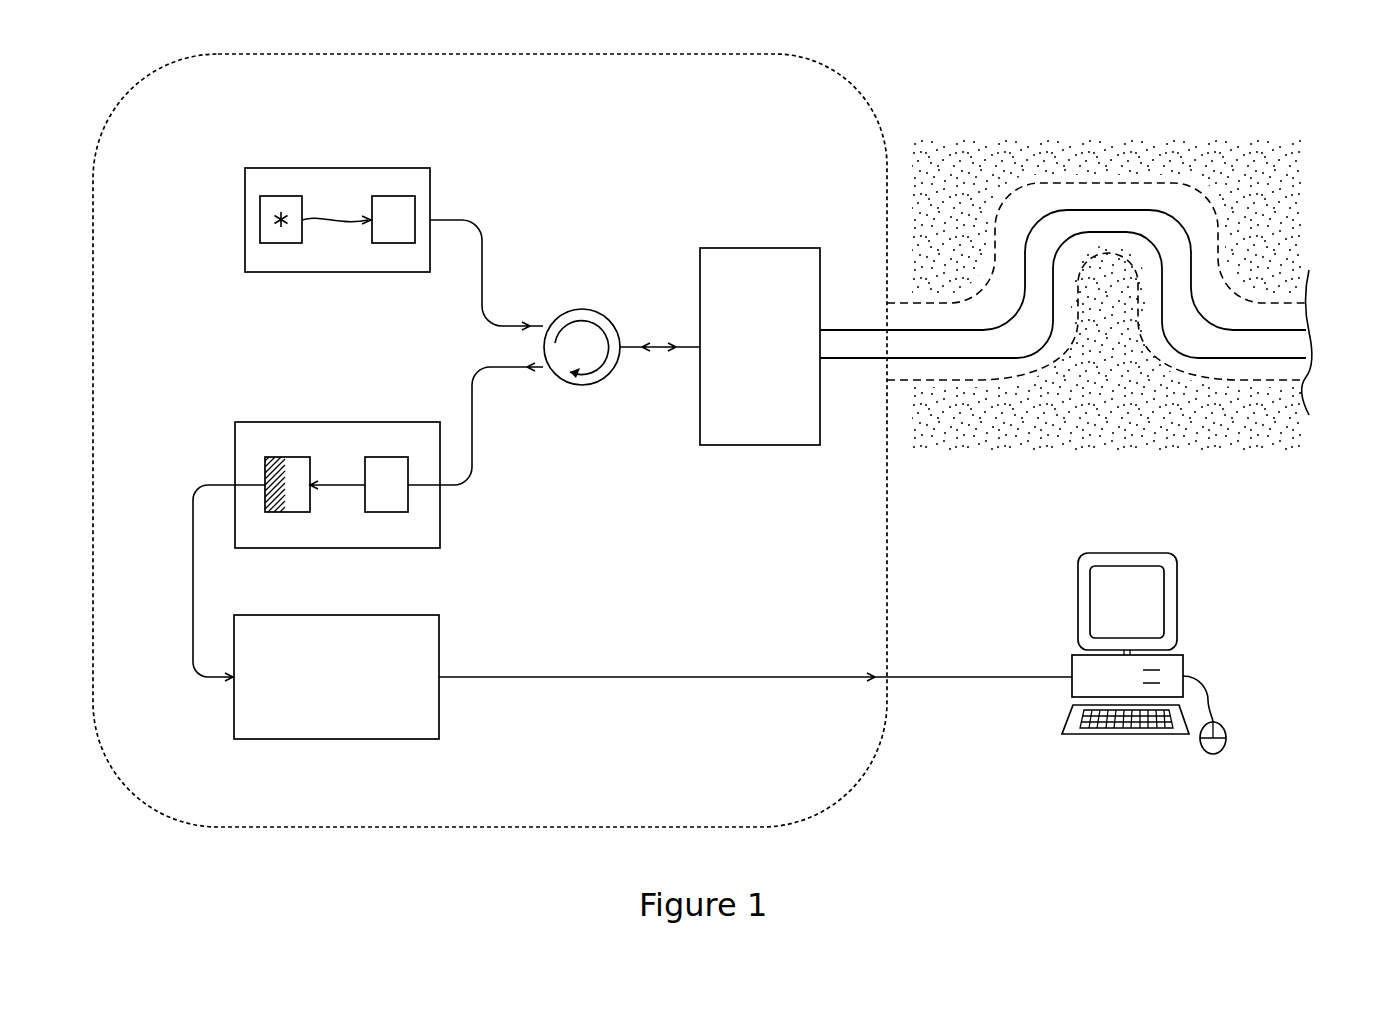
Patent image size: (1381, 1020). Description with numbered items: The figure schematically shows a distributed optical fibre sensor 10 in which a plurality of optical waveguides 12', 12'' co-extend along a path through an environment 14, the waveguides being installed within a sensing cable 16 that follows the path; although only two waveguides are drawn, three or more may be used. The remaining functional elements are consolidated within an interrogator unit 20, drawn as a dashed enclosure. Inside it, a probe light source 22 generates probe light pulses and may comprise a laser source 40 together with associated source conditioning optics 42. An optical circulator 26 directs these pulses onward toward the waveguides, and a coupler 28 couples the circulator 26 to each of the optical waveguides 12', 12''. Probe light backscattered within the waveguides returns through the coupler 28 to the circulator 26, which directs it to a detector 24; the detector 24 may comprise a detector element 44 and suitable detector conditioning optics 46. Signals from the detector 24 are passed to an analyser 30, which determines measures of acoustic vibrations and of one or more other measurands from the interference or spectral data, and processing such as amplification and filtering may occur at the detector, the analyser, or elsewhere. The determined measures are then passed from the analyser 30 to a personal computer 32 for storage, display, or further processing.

The distributed optical fibre sensor 10 is at (972, 68).
The optical waveguide 12' is at (1063, 216).
The optical waveguide 12'' is at (1063, 366).
The environment 14 is at (1297, 168).
The sensing cable 16 is at (1278, 302).
The interrogator unit 20 is at (522, 53).
The probe light source 22 is at (340, 168).
The detector 24 is at (303, 422).
The optical circulator 26 is at (606, 318).
The coupler 28 is at (762, 248).
The analyser 30 is at (337, 613).
The personal computer 32 is at (1177, 586).
The laser source 40 is at (273, 243).
The source conditioning optics 42 is at (393, 243).
The detector element 44 is at (280, 457).
The detector conditioning optics 46 is at (388, 457).